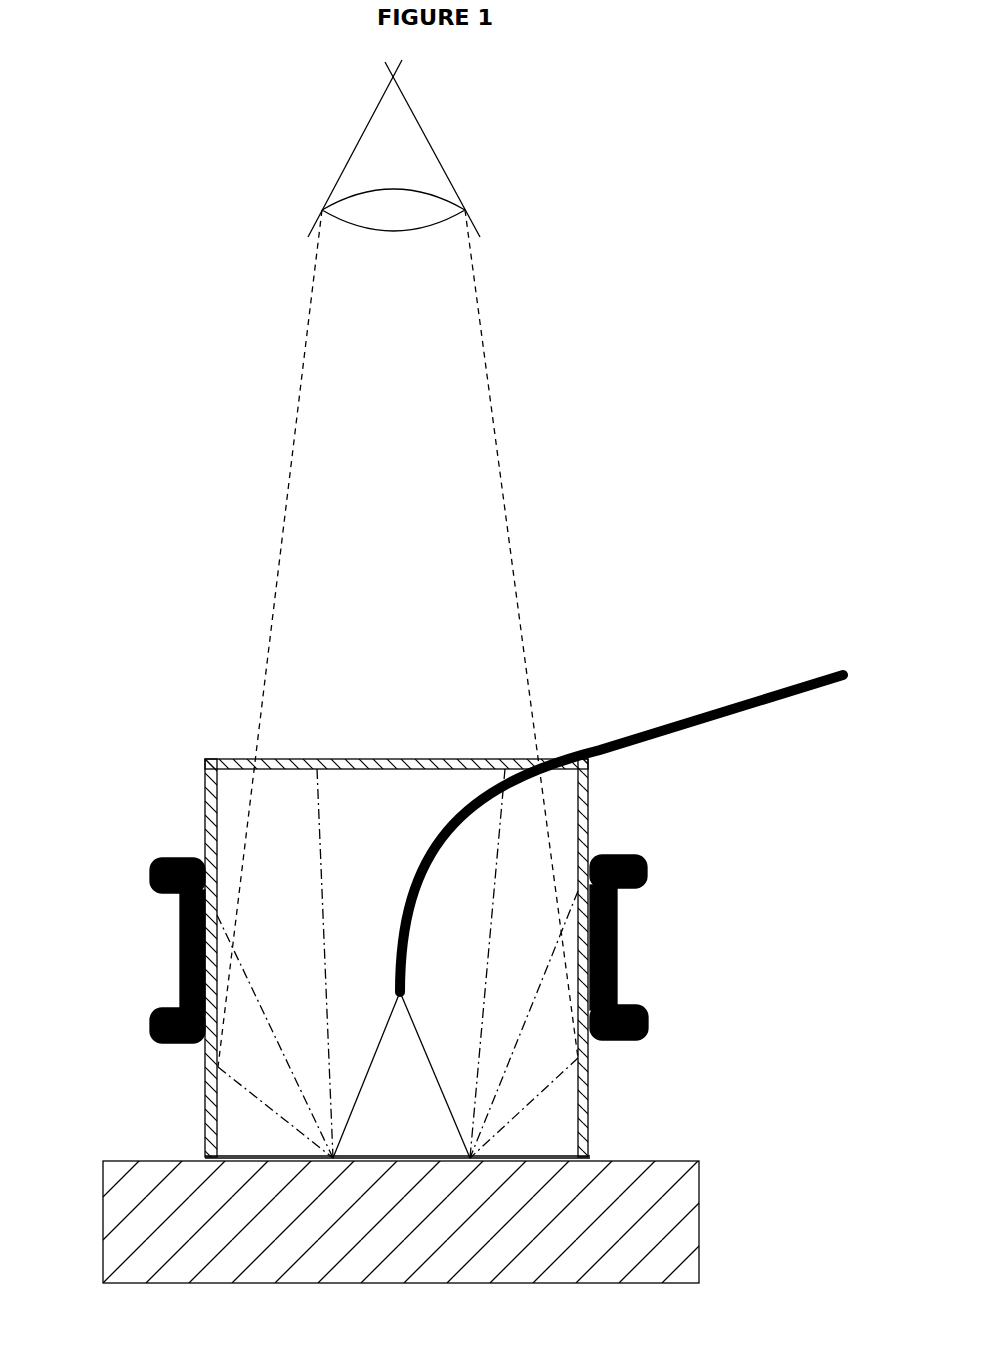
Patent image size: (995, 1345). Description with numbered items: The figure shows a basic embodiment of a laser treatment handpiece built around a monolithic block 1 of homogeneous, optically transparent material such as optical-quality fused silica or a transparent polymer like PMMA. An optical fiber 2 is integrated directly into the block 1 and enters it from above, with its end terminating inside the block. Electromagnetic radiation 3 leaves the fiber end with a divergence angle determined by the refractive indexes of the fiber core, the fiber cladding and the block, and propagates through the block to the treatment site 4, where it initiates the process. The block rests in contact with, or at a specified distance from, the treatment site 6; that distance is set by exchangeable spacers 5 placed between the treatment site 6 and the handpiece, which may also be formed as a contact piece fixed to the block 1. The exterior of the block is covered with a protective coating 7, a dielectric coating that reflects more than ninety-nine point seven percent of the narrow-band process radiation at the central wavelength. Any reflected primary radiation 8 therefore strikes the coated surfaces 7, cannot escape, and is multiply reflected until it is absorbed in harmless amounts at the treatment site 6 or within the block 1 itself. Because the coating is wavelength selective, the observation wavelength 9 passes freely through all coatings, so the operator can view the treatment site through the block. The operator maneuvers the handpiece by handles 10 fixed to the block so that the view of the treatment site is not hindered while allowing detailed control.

The monolithic block 1 is at (230, 826).
The optical fiber 2 is at (797, 712).
The electromagnetic radiation 3 is at (365, 1075).
The treatment site 4 is at (455, 1140).
The exchangeable spacers 5 is at (595, 1153).
The treatment site 6 is at (688, 1187).
The protective coating 7 is at (383, 763).
The reflected primary radiation 8 is at (498, 855).
The observation wavelength 9 is at (510, 517).
The handles 10 is at (173, 952).